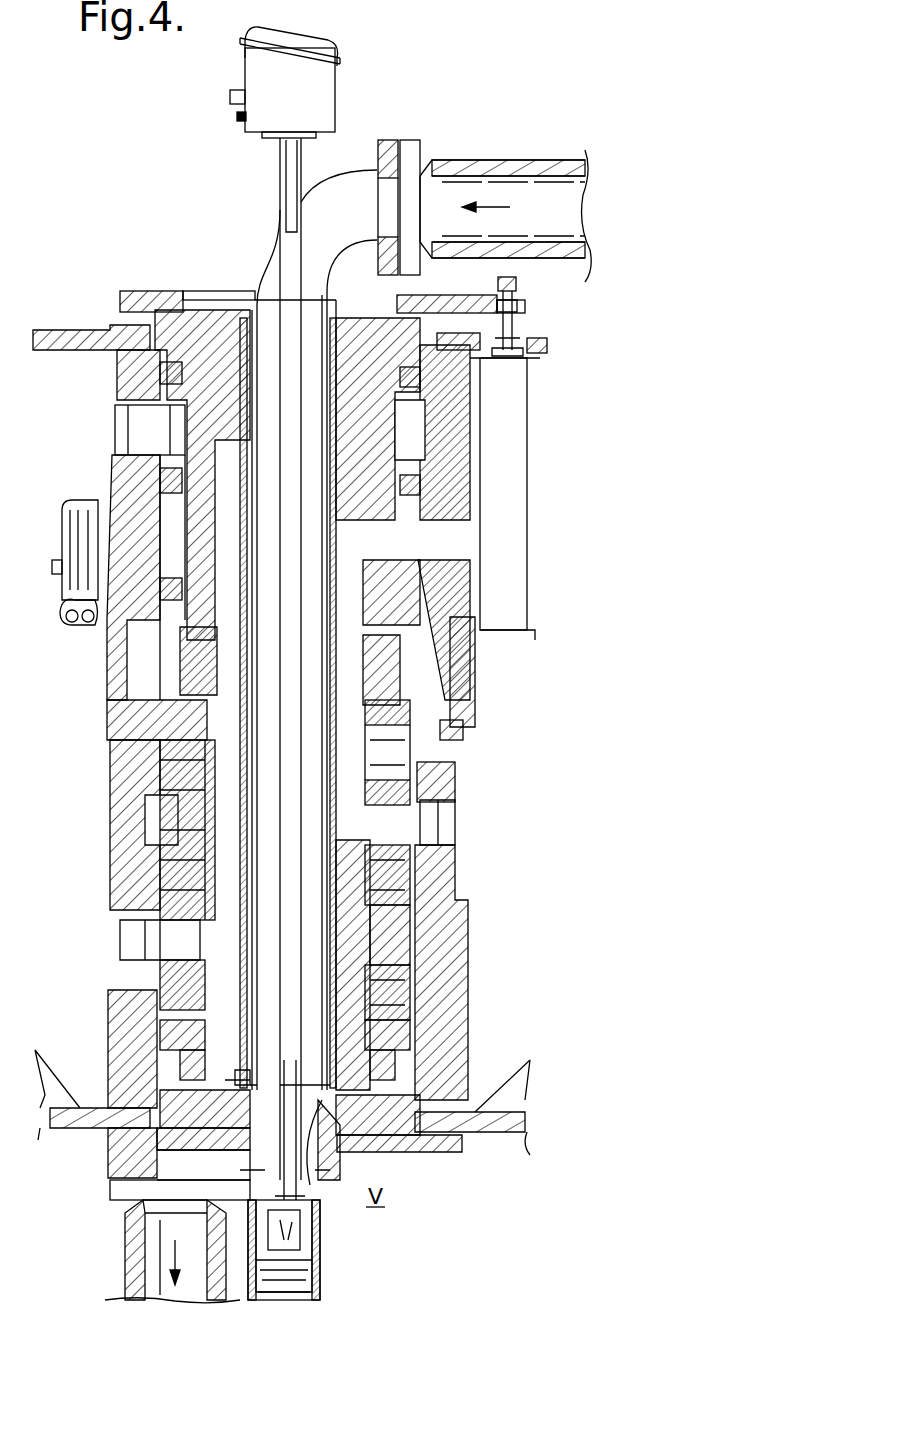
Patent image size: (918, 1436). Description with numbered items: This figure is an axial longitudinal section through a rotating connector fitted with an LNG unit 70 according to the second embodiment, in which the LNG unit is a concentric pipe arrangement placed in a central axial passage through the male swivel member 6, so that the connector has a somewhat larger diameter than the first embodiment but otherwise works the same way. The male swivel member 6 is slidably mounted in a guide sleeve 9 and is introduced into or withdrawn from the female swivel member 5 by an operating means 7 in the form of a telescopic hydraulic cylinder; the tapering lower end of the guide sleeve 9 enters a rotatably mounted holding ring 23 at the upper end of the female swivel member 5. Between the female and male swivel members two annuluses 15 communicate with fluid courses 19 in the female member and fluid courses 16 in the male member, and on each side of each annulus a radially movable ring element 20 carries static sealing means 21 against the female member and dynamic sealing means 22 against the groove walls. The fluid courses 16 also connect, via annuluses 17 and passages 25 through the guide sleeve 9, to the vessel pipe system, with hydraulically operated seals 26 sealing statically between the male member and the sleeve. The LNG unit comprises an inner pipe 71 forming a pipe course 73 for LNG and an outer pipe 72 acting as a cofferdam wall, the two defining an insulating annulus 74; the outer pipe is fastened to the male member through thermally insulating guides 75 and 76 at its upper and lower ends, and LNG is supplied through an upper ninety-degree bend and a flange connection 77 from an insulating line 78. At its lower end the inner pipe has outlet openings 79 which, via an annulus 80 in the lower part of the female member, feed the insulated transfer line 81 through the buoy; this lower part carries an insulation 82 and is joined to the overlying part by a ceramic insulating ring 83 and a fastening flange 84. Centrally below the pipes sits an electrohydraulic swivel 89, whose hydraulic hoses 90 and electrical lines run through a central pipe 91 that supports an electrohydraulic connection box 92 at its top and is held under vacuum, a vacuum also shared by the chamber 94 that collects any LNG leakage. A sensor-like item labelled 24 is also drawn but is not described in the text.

The female swivel member 5 is at (450, 1036).
The male swivel member 6 is at (385, 492).
The operating means 7 is at (518, 583).
The guide sleeve 9 is at (128, 500).
The annuluses 15 is at (150, 816).
The fluid courses 16 is at (345, 688).
The annuluses 17 is at (412, 448).
The fluid courses 19 is at (135, 935).
The ring element 20 is at (418, 998).
The static sealing means 21 is at (170, 995).
The dynamic sealing means 22 is at (420, 900).
The holding ring 23 is at (112, 680).
The sensor 24 is at (66, 542).
The passages 25 is at (128, 423).
The hydraulically operated seals 26 is at (420, 502).
The LNG unit 70 is at (235, 811).
The inner pipe 71 is at (325, 918).
The outer pipe 72 is at (325, 950).
The pipe course 73 is at (262, 985).
The insulating annulus 74 is at (262, 1012).
The thermally insulating guide 75 is at (237, 332).
The thermally insulating guide 76 is at (240, 1078).
The flange connection 77 is at (390, 145).
The insulating line 78 is at (512, 172).
The outlet openings 79 is at (240, 1118).
The annulus 80 is at (330, 1158).
The insulated transfer line 81 is at (130, 1246).
The insulation 82 is at (175, 1140).
The ceramic insulating ring 83 is at (120, 1128).
The fastening flange 84 is at (500, 1130).
The electrohydraulic swivel 89 is at (300, 1240).
The hydraulic hoses 90 is at (284, 186).
The pipe 91 is at (302, 158).
The electrohydraulic connection box 92 is at (250, 67).
The chamber 94 is at (315, 1180).